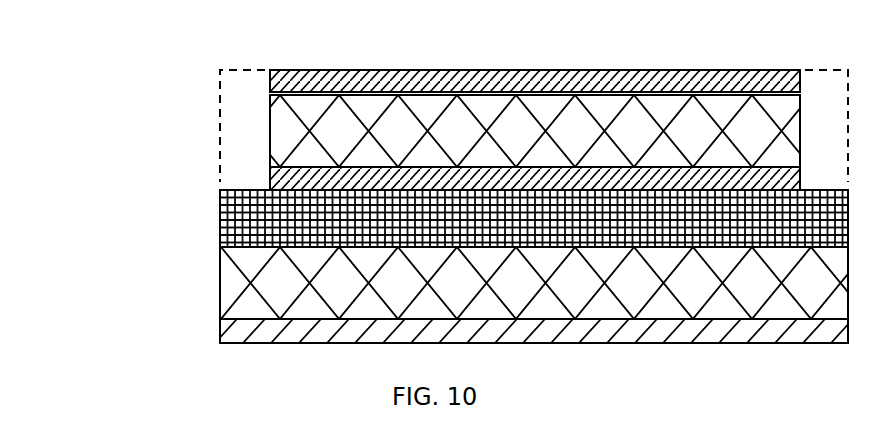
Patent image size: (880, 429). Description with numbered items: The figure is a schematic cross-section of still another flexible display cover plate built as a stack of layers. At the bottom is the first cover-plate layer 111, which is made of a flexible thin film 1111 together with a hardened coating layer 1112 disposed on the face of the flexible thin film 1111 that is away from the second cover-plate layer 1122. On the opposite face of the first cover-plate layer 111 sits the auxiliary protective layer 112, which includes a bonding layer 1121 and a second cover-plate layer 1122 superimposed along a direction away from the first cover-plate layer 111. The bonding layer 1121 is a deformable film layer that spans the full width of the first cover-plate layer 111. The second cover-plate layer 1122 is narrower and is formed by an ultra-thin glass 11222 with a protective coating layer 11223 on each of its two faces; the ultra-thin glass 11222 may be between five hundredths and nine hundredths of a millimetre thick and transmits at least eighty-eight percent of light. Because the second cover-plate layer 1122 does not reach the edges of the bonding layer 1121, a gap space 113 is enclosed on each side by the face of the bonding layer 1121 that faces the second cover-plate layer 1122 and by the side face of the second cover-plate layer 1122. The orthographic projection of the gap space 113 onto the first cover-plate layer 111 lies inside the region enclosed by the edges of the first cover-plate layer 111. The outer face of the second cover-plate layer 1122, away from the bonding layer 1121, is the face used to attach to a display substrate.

The first cover-plate layer 111 is at (434, 295).
The flexible thin film 1111 is at (248, 280).
The hardened coating layer 1112 is at (246, 328).
The auxiliary protective layer 112 is at (434, 158).
The bonding layer 1121 is at (238, 218).
The second cover-plate layer 1122 is at (151, 82).
The ultra-thin glass 11222 is at (285, 130).
The protective coating layer 11223 is at (280, 85).
The gap space 113 is at (245, 52).